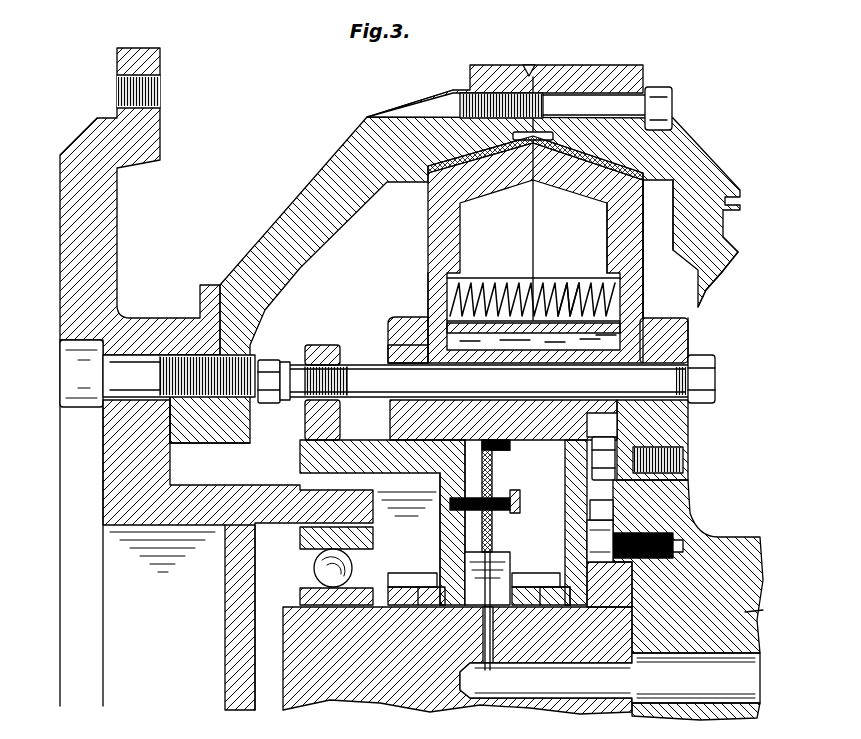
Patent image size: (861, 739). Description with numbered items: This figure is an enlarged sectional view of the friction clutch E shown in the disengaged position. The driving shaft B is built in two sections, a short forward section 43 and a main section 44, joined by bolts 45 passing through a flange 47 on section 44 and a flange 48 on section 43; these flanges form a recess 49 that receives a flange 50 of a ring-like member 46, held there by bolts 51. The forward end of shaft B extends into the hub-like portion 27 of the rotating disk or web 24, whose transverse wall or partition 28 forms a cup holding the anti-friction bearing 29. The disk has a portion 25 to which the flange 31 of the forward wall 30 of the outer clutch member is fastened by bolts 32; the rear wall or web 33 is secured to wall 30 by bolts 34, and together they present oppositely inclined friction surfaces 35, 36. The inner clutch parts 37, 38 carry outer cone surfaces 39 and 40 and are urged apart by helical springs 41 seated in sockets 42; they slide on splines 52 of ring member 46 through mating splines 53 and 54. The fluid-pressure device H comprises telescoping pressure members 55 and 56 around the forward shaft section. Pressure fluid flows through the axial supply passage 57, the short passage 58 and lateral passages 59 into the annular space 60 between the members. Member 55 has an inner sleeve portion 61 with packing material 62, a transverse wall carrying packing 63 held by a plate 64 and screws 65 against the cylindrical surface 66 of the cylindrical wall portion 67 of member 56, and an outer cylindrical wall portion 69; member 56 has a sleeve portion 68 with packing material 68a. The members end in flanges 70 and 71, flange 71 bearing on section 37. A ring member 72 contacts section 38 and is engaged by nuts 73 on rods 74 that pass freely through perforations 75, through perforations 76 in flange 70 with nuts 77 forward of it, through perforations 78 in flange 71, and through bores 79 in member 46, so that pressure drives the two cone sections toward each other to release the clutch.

The rotating disk or web 24 is at (78, 232).
The portion of disk 25 is at (135, 449).
The hub-like portion 27 is at (280, 492).
The transverse wall or partition 28 is at (240, 671).
The anti-friction bearing 29 is at (318, 572).
The forward wall of outer clutch member 30 is at (292, 224).
The flange 31 is at (222, 420).
The fastening bolts 32 is at (76, 369).
The rear wall or web 33 is at (730, 250).
The fastening bolts 34 is at (667, 98).
The friction surface 35 is at (433, 166).
The friction surface 36 is at (636, 165).
The inner clutch part 37 is at (440, 240).
The inner clutch part 38 is at (630, 248).
The outer cone surface 39 is at (428, 176).
The outer cone surface 40 is at (648, 186).
The helical springs 41 is at (505, 278).
The sockets 42 is at (566, 278).
The forward shaft section 43 is at (336, 692).
The main shaft section 44 is at (745, 568).
The bolts 45 is at (655, 538).
The ring-like member 46 is at (688, 418).
The flange 47 is at (620, 493).
The flange 48 is at (607, 529).
The recess 49 is at (688, 479).
The flange 50 is at (688, 463).
The bolts 51 is at (688, 444).
The splines 52 is at (546, 350).
The splines 53 is at (518, 347).
The splines 54 is at (600, 346).
The pressure member 55 is at (453, 526).
The pressure member 56 is at (572, 516).
The axial supply passage 57 is at (745, 679).
The axial supply passage 58 is at (610, 684).
The lateral passages 59 is at (487, 655).
The annular fluid-pressure space 60 is at (500, 580).
The inner sleeve portion 61 is at (398, 580).
The packing material 62 is at (425, 588).
The packing 63 is at (512, 444).
The plate 64 is at (506, 486).
The screws 65 is at (522, 501).
The cylindrical surface 66 is at (540, 442).
The cylindrical wall portion 67 is at (450, 426).
The sleeve portion 68 is at (525, 578).
The packing material 68a is at (545, 586).
The outer cylindrical wall portion 69 is at (306, 441).
The flange 70 is at (321, 345).
The flange 71 is at (396, 333).
The ring member 72 is at (667, 328).
The nuts 73 is at (716, 378).
The rods 74 is at (482, 381).
The perforations 75 is at (690, 332).
The perforations 76 is at (272, 360).
The nuts 77 is at (285, 402).
The perforations 78 is at (398, 356).
The bores 79 is at (446, 358).
The friction clutch E is at (365, 240).
The fluid-pressure device H is at (527, 530).
The driving shaft B is at (764, 607).